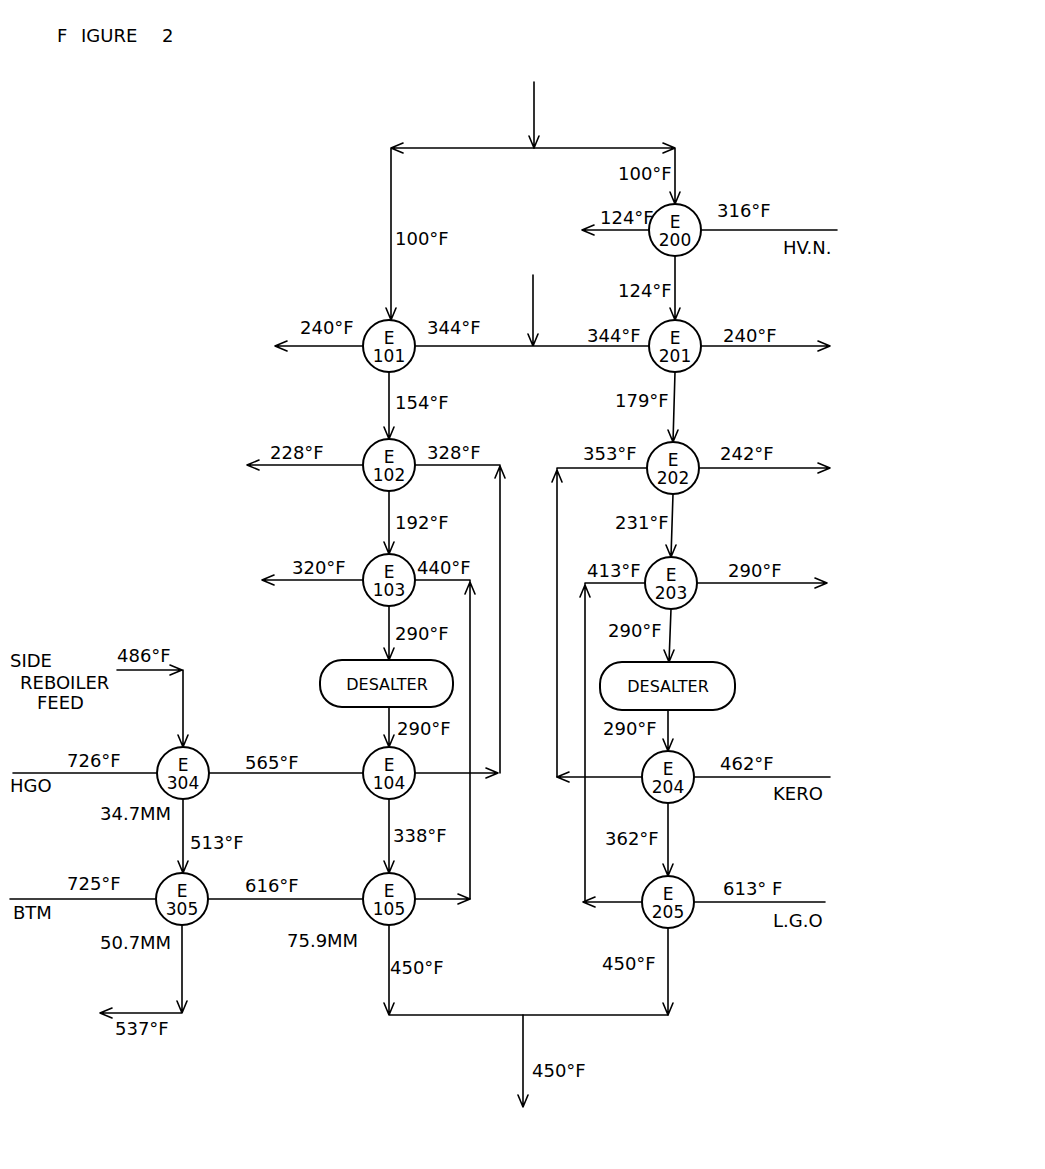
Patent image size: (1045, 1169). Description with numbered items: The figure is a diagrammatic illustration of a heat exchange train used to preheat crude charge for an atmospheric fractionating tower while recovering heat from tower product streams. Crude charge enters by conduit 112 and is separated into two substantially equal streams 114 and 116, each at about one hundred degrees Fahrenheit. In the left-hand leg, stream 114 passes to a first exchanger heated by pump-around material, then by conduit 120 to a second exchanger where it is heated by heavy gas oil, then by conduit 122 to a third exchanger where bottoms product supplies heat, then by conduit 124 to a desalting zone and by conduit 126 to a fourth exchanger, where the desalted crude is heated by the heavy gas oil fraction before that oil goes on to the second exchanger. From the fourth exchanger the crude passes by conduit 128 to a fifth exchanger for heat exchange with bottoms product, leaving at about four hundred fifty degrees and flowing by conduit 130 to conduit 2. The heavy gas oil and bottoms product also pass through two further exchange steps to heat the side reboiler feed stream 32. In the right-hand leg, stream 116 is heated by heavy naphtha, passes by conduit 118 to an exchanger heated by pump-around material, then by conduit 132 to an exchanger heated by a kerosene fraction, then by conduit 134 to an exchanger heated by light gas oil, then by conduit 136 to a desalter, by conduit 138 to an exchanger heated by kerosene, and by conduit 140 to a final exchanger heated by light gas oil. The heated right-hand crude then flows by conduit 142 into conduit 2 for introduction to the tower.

The conduit 2 is at (522, 1066).
The stream 32 is at (185, 700).
The conduit 112 is at (535, 100).
The stream 114 is at (438, 146).
The stream 116 is at (588, 146).
The conduit 118 is at (676, 287).
The conduit 120 is at (385, 383).
The conduit 122 is at (385, 520).
The conduit 124 is at (385, 617).
The conduit 126 is at (385, 723).
The conduit 128 is at (385, 832).
The conduit 130 is at (446, 1016).
The conduit 132 is at (676, 397).
The conduit 134 is at (676, 517).
The conduit 136 is at (674, 630).
The conduit 138 is at (672, 728).
The conduit 140 is at (672, 835).
The conduit 142 is at (670, 968).